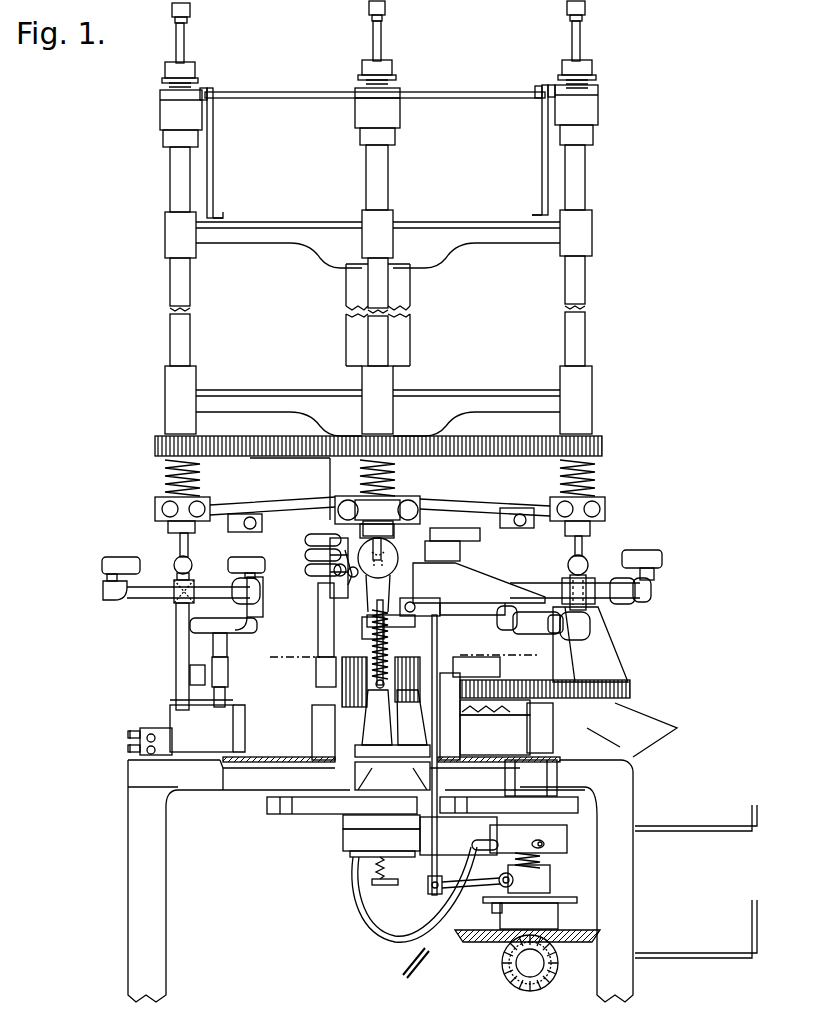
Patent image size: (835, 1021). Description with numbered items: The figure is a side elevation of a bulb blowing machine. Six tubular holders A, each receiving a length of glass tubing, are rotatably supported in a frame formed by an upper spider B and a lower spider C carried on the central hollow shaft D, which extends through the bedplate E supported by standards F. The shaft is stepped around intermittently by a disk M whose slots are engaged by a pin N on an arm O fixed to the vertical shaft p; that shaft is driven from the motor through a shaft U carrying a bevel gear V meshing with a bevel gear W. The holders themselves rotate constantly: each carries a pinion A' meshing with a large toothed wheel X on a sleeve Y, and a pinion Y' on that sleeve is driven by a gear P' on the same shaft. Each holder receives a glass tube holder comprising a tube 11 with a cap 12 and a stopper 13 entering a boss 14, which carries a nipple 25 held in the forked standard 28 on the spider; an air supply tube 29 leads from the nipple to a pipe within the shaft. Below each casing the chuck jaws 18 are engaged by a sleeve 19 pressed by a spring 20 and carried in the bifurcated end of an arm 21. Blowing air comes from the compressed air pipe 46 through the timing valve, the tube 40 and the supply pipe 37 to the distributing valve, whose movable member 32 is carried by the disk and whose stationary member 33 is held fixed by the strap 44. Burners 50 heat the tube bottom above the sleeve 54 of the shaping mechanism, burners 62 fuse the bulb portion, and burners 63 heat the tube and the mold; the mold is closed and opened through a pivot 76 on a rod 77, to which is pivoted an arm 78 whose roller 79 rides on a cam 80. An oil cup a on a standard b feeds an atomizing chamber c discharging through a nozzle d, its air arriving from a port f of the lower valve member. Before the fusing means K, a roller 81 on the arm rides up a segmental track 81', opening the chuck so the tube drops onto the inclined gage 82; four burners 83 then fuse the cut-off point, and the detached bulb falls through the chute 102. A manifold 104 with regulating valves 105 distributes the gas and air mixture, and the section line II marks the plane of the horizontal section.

The tubular holder A is at (371, 255).
The pinion A' is at (367, 436).
The upper spider B is at (266, 212).
The lower spider C is at (278, 388).
The central hollow shaft D is at (412, 330).
The bedplate E is at (242, 784).
The standards F is at (166, 912).
The fusing means K is at (568, 590).
The disk M is at (302, 816).
The pin N is at (470, 812).
The arm O is at (545, 826).
The gear P' is at (558, 706).
The shaft U is at (520, 976).
The bevel gear V is at (554, 970).
The bevel gear W is at (466, 945).
The large toothed wheel X is at (289, 489).
The sleeve Y is at (315, 620).
The pinion Y' is at (353, 682).
The section line II— II is at (395, 656).
The oil cup a is at (320, 542).
The standard b is at (318, 647).
The atomizing chamber c is at (349, 602).
The nozzle d is at (352, 551).
The port f is at (545, 842).
The shaft p is at (545, 860).
The tube 11 is at (382, 44).
The cap 12 is at (386, 6).
The stopper 13 is at (592, 62).
The boss 14 is at (400, 120).
The pivoted jaws 18 is at (168, 538).
The sleeve 19 is at (596, 522).
The spring 20 is at (594, 474).
The arms 21 is at (155, 508).
The nipple 25 is at (540, 92).
The standard 28 is at (212, 164).
The air supply tube 29 is at (269, 98).
The upper movable member of distributing valve 32 is at (343, 828).
The lower stationary member of distributing valve 33 is at (343, 845).
The supply pipe 37 is at (350, 856).
The tube 40 is at (378, 926).
The strap 44 is at (387, 858).
The supply pipe 46 is at (413, 965).
The gas and air burners 50 is at (100, 570).
The sleeve 54 is at (178, 650).
The gas and air burners 62 is at (192, 678).
The gas and air burners 63 is at (305, 572).
The pivot 76 is at (420, 622).
The vertically extending rod 77 is at (437, 661).
The arm 78 is at (514, 916).
The roller 79 is at (510, 880).
The cam 80 is at (562, 900).
The roller 81 is at (392, 528).
The segmental track 81' is at (470, 544).
The gage 82 is at (470, 575).
The gas and air burners 83 is at (660, 560).
The chute 102 is at (598, 632).
The manifold 104 is at (148, 728).
The regulating valves 105 is at (128, 744).